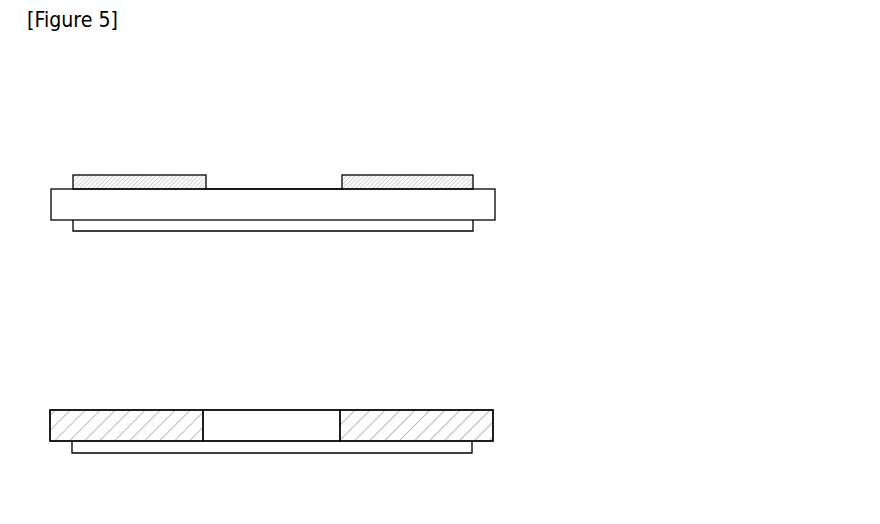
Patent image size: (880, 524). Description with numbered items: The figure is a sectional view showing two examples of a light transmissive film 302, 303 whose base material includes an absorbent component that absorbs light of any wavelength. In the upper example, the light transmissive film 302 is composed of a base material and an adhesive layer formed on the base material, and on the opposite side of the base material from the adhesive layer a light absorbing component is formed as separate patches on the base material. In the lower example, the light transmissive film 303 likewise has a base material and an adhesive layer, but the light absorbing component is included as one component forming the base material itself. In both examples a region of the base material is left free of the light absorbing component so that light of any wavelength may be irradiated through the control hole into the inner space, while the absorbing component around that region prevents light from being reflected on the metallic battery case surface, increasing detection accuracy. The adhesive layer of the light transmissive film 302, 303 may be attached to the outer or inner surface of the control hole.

The light transmissive film 302 is at (475, 124).
The light transmissive film 303 is at (476, 363).